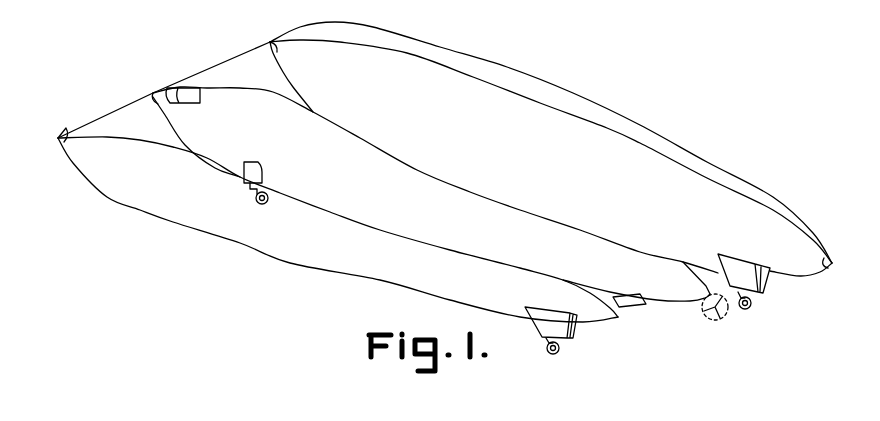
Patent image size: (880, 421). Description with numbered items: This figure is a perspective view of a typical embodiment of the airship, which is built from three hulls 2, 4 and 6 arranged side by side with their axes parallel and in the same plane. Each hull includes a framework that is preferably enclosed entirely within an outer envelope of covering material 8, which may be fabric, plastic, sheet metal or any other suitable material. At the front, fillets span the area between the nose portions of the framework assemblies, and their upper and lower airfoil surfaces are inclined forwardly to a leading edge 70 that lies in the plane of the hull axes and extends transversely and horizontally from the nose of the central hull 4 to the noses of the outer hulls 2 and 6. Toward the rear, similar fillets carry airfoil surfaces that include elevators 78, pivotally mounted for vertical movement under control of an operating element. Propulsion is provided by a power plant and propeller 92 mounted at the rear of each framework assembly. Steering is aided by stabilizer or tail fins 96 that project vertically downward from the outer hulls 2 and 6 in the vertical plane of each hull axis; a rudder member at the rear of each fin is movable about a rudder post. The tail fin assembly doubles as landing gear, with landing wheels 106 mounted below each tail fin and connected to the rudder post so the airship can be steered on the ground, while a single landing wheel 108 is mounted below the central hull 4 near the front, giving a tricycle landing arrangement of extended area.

The hull 2 is at (175, 215).
The central hull 4 is at (255, 108).
The hull 6 is at (551, 149).
The outer envelope of covering material 8 is at (597, 102).
The leading edge 70 is at (130, 106).
The elevator 78 is at (618, 297).
The propeller 92 is at (713, 321).
The stabilizer fin 96 is at (542, 322).
The landing wheel 106 is at (553, 356).
The landing wheel 108 is at (261, 207).